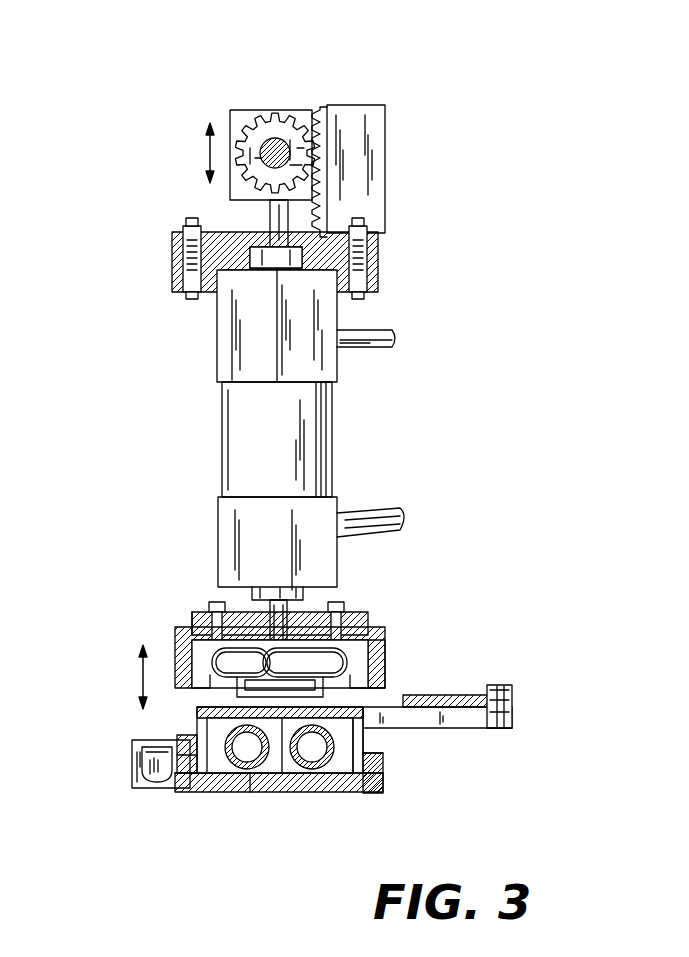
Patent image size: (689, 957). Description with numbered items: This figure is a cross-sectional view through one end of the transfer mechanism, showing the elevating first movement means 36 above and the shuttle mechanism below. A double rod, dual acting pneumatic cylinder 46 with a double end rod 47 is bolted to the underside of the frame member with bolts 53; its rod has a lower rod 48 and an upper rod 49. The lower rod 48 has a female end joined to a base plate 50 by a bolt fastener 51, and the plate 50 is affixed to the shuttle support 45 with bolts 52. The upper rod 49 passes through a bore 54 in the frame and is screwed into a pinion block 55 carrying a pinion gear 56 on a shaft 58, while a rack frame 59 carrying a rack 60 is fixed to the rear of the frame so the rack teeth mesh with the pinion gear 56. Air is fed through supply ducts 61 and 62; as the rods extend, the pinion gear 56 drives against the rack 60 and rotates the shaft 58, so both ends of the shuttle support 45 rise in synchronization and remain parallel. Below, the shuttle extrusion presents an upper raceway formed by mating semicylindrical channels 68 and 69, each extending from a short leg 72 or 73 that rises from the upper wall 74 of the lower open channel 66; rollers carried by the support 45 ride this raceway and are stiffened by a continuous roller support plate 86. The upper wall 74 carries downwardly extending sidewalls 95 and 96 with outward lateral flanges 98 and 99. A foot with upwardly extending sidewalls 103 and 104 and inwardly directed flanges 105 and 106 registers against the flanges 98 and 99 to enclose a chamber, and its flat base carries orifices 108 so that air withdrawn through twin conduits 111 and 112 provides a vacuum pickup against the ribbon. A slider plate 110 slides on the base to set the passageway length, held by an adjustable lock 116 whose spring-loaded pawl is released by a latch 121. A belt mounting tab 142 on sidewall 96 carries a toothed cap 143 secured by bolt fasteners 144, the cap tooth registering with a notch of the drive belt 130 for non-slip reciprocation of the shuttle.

The first movement means 36 is at (378, 250).
The shuttle support 45 is at (385, 640).
The pneumatic cylinder 46 is at (315, 440).
The double end rod 47 is at (256, 247).
The lower rod 48 is at (297, 602).
The upper rod 49 is at (265, 212).
The base plate 50 is at (370, 612).
The bolt fastener 51 is at (195, 625).
The bolts 52 is at (210, 605).
The bolts 53 is at (345, 303).
The bore 54 is at (183, 250).
The pinion block 55 is at (250, 110).
The pinion gear 56 is at (250, 130).
The shaft 58 is at (282, 140).
The rack frame 59 is at (375, 160).
The rack 60 is at (323, 110).
The supply duct 61 is at (397, 338).
The supply duct 62 is at (400, 515).
The lower open channel 66 is at (345, 762).
The semicylindrical channel 68 is at (205, 655).
The semicylindrical channel 69 is at (355, 660).
The short leg 72 is at (225, 697).
The short leg 73 is at (330, 696).
The upper wall 74 is at (363, 707).
The roller support plate 86 is at (282, 772).
The sidewall 95 is at (200, 710).
The sidewall 96 is at (365, 740).
The lateral flange 98 is at (200, 792).
The lateral flange 99 is at (383, 775).
The sidewall 103 is at (200, 762).
The sidewall 104 is at (378, 757).
The lateral flange 105 is at (190, 745).
The lateral flange 106 is at (375, 745).
The orifices 108 is at (235, 792).
The slider plate 110 is at (378, 785).
The conduit 111 is at (258, 792).
The conduit 112 is at (322, 790).
The adjustable lock 116 is at (130, 750).
The latch 121 is at (150, 772).
The drive belt 130 is at (470, 708).
The belt mounting tab 142 is at (490, 728).
The toothed cap 143 is at (450, 700).
The bolt fasteners 144 is at (512, 690).